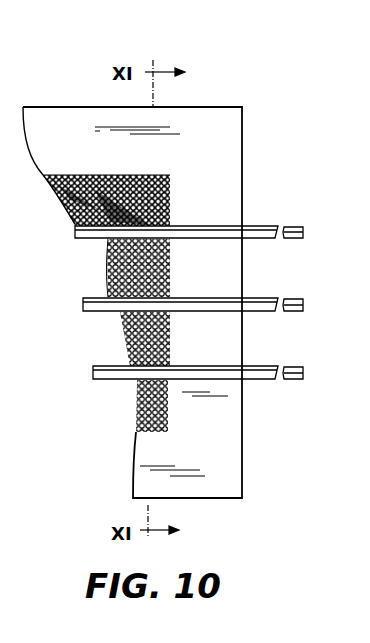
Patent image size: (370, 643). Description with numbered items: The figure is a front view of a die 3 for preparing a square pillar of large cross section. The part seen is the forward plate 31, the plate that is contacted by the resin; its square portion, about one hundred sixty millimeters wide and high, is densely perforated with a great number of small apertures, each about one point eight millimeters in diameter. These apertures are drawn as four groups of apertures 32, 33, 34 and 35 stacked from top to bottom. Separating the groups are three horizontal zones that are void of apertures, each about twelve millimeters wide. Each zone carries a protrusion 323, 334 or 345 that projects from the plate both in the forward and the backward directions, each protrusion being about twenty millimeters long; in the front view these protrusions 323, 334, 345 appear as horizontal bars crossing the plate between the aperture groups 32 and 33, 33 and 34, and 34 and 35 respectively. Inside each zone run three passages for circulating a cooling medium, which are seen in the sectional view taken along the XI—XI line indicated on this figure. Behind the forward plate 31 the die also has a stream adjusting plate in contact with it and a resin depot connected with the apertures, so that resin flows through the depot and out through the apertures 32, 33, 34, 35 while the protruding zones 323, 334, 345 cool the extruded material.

The die 3 is at (220, 106).
The forward plate 31 is at (232, 136).
The apertures 32 is at (156, 178).
The apertures 33 is at (163, 260).
The apertures 34 is at (163, 330).
The apertures 35 is at (168, 415).
The protrusion 323 is at (160, 223).
The protrusion 334 is at (160, 297).
The protrusion 345 is at (162, 366).